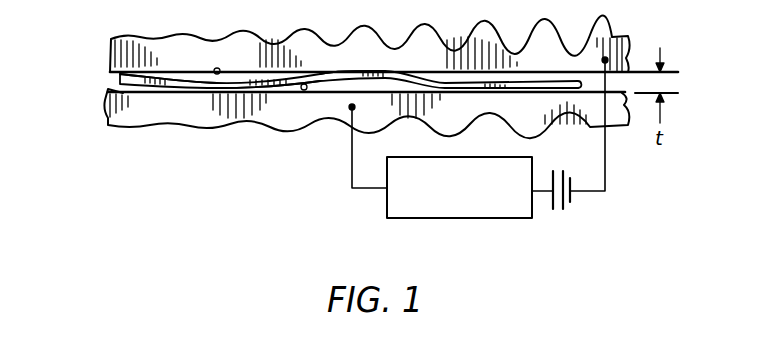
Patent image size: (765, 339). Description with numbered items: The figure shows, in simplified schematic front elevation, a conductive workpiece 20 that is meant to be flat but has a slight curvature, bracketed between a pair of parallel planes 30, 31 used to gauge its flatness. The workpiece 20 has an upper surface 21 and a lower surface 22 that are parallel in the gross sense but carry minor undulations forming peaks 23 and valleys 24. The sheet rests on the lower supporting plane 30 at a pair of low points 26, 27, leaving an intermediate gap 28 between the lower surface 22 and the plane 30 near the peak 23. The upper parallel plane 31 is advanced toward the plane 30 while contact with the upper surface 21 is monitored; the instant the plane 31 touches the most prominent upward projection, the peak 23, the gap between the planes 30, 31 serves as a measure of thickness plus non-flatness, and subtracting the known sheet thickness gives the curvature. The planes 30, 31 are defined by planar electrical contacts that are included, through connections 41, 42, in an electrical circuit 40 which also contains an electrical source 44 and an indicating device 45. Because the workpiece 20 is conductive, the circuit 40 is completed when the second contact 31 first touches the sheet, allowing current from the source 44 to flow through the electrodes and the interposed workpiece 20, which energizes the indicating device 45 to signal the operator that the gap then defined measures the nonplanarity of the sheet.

The workpiece 20 is at (541, 84).
The upper surface 21 is at (190, 80).
The lower surface 22 is at (364, 118).
The peak 23 is at (341, 72).
The valley 24 is at (532, 100).
The low point 26 is at (205, 93).
The low point 27 is at (492, 92).
The gap 28 is at (331, 86).
The lower supporting plane 30 is at (302, 90).
The upper parallel plane 31 is at (218, 68).
The electrical circuit 40 is at (473, 167).
The connection 41 is at (604, 162).
The connection 42 is at (352, 176).
The electrical source 44 is at (572, 196).
The indicating device 45 is at (387, 208).